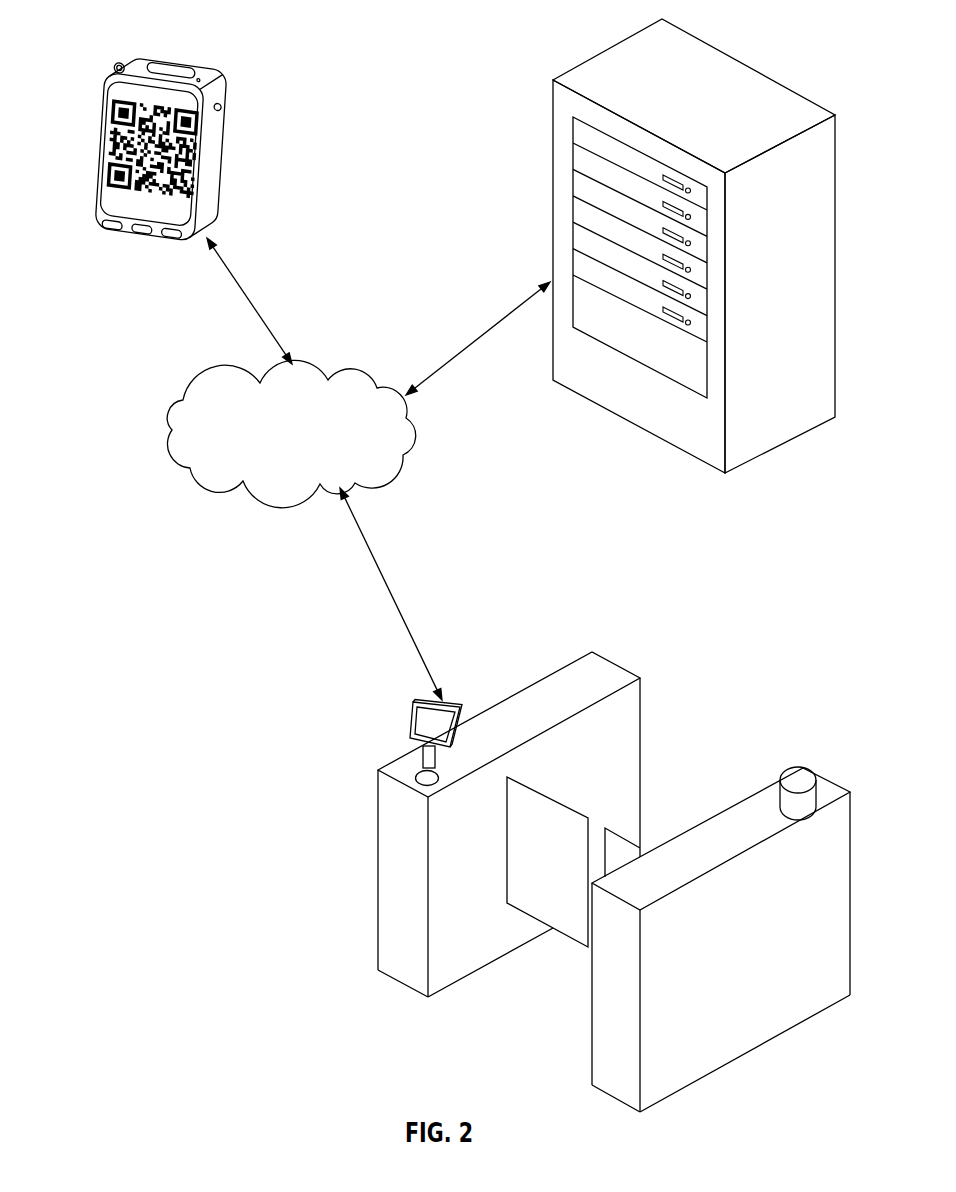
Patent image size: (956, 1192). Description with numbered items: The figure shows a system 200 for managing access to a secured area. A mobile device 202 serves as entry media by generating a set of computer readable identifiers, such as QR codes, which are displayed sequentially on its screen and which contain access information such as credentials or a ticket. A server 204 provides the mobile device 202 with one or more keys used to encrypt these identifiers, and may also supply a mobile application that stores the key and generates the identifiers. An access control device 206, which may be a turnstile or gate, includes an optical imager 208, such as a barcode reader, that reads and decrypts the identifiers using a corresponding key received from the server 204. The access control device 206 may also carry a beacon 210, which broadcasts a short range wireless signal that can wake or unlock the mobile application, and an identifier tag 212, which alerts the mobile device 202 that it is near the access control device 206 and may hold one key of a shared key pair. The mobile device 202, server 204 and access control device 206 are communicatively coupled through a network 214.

The system 200 is at (158, 703).
The mobile device 202 is at (110, 65).
The server 204 is at (552, 79).
The access control device 206 is at (567, 663).
The optical imager 208 is at (410, 694).
The beacon 210 is at (787, 768).
The identifier tag 212 is at (418, 768).
The network 214 is at (304, 448).